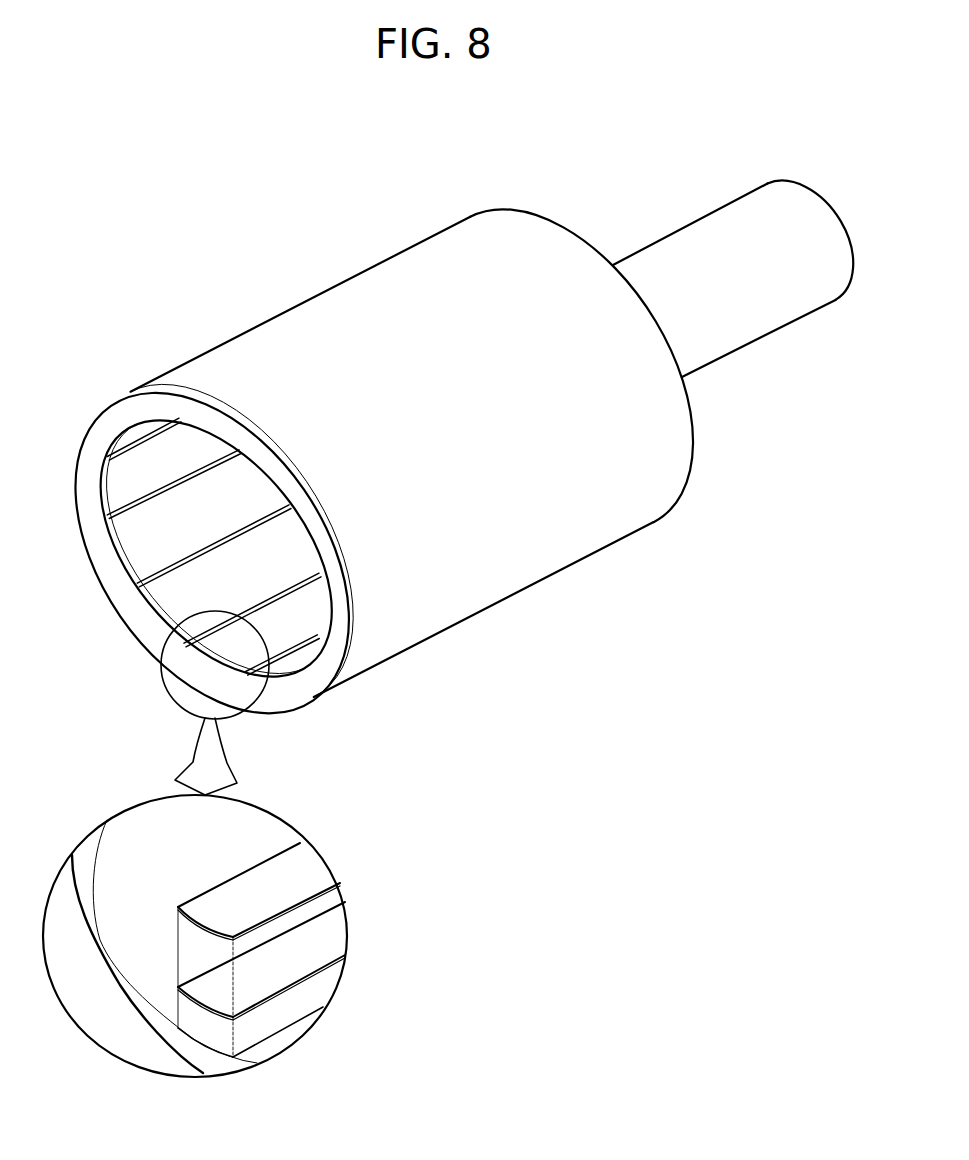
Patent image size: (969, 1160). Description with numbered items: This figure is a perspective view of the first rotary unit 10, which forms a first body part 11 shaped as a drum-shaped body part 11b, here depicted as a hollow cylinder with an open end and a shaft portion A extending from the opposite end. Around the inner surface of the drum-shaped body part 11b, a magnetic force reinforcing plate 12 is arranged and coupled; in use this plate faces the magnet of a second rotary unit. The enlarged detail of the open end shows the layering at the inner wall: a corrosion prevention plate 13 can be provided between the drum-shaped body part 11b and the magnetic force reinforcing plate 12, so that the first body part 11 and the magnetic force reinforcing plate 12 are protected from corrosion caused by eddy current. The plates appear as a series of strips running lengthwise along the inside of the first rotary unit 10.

The first rotary unit 10 is at (447, 439).
The first body part 11 is at (383, 463).
The drum-shaped body part 11b is at (260, 367).
The magnetic force reinforcing plate 12 is at (250, 918).
The corrosion prevention plate 13 is at (270, 973).
The shaft A is at (673, 246).